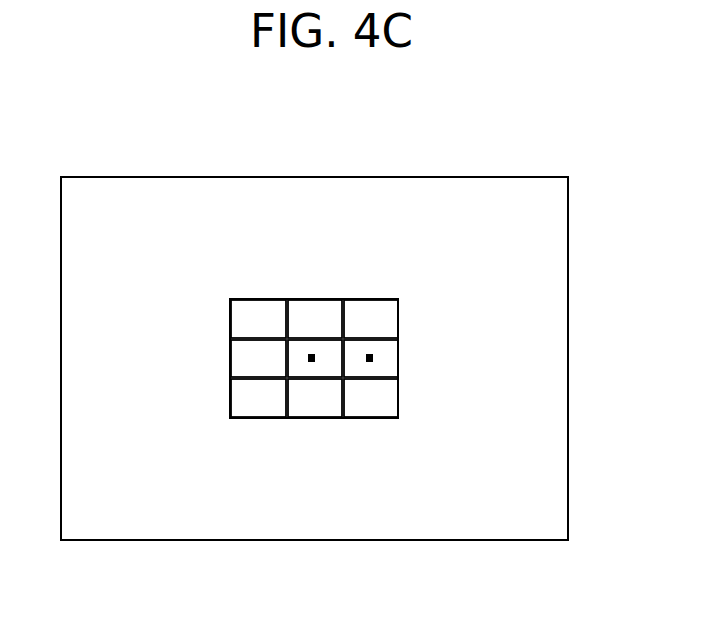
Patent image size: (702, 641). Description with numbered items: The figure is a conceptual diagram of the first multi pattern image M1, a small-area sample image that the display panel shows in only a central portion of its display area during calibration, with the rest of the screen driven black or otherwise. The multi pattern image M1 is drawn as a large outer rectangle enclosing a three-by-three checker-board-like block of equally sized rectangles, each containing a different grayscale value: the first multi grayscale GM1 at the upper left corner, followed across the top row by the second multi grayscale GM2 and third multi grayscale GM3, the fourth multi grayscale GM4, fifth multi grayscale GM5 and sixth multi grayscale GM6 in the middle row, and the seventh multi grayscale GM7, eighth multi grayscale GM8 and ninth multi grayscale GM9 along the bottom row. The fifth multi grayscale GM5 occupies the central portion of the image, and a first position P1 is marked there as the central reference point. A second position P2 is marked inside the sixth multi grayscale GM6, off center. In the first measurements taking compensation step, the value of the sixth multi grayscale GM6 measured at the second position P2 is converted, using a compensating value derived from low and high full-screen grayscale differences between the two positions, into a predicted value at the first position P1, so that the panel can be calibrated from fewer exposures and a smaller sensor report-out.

The first multi pattern image M1 is at (305, 147).
The first position P1 is at (311, 362).
The second position P2 is at (369, 362).
The first multi grayscale GM1 is at (258, 319).
The second multi grayscale GM2 is at (315, 319).
The third multi grayscale GM3 is at (371, 319).
The fourth multi grayscale GM4 is at (258, 358).
The fifth multi grayscale GM5 is at (315, 358).
The sixth multi grayscale GM6 is at (371, 358).
The seventh multi grayscale GM7 is at (258, 398).
The eighth multi grayscale GM8 is at (315, 398).
The ninth multi grayscale GM9 is at (371, 398).